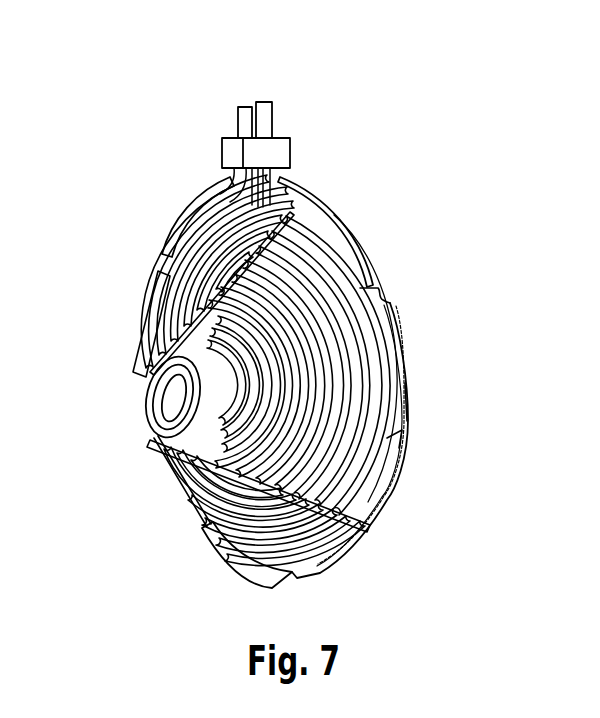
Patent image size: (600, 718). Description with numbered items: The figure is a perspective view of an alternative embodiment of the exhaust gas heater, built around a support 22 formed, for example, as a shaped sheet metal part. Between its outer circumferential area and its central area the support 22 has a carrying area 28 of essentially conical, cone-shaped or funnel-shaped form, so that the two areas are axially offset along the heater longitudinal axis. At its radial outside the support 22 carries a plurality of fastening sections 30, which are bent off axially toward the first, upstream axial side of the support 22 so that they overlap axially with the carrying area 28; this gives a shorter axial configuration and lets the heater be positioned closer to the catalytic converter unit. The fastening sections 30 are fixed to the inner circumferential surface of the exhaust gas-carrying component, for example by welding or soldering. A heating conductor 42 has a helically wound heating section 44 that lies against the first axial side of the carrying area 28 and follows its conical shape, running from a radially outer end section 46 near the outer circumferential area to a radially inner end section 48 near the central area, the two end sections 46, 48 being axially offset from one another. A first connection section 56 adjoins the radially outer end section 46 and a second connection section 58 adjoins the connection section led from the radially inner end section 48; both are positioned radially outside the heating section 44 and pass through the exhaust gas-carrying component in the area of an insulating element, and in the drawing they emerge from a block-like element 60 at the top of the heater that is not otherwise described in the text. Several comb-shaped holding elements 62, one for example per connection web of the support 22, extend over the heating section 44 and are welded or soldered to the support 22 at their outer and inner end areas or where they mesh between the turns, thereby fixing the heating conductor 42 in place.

The support 22 is at (380, 296).
The carrying area 28 is at (357, 532).
The fastening sections 30 is at (348, 242).
The heating conductor 42 is at (390, 392).
The heating section 44 is at (333, 460).
The radially outer end section 46 is at (218, 198).
The radially inner end section 48 is at (148, 390).
The first connection section 56 is at (235, 117).
The second connection section 58 is at (277, 118).
The connector block 60 is at (293, 148).
The holding elements 62 is at (146, 337).